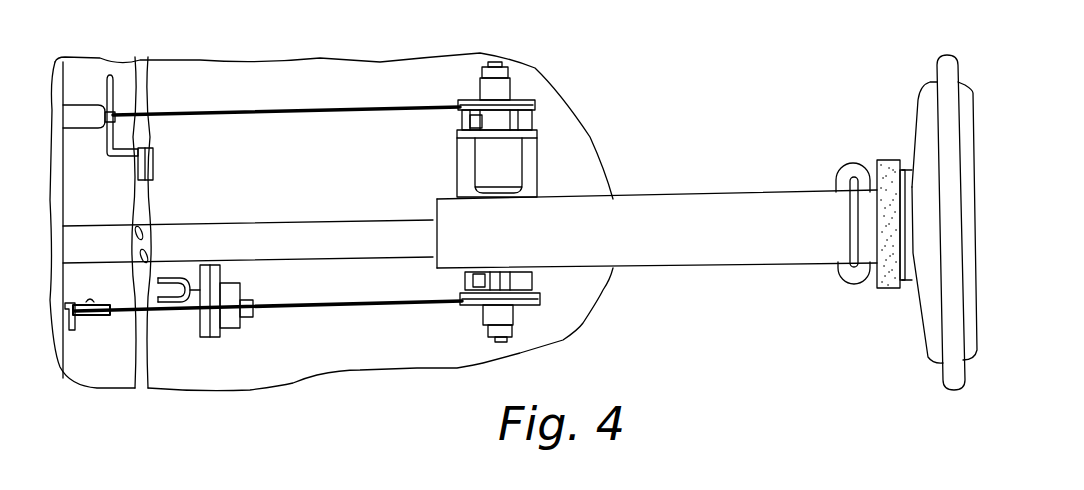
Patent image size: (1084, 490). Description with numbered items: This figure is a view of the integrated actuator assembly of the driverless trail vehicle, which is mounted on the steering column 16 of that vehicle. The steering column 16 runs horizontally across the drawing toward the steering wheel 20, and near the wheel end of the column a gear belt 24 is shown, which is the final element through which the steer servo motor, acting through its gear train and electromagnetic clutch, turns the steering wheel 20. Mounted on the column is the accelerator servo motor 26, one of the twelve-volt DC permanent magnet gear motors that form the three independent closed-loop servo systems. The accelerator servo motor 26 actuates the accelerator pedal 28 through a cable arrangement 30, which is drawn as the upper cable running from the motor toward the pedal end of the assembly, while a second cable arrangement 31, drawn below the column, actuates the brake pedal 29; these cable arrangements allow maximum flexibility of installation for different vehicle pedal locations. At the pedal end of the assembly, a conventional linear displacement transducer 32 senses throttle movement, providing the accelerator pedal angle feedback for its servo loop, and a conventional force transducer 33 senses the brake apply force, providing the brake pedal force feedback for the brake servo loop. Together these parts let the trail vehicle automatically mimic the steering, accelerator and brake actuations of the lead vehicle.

The steering column 16 is at (723, 200).
The steering wheel 20 is at (945, 66).
The gear belt 24 is at (883, 165).
The accelerator servo motor 26 is at (513, 162).
The accelerator pedal 28 is at (153, 163).
The brake pedal 29 is at (207, 337).
The cable arrangement 30 is at (327, 113).
The cable arrangement 31 is at (357, 307).
The linear displacement transducer 32 is at (87, 112).
The force transducer 33 is at (237, 285).